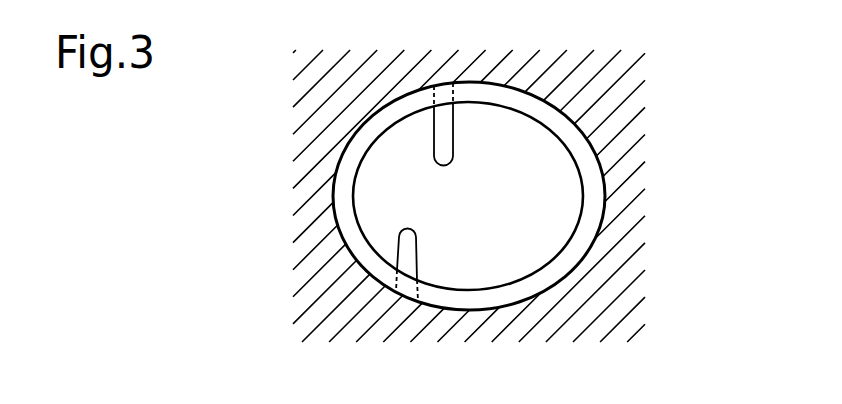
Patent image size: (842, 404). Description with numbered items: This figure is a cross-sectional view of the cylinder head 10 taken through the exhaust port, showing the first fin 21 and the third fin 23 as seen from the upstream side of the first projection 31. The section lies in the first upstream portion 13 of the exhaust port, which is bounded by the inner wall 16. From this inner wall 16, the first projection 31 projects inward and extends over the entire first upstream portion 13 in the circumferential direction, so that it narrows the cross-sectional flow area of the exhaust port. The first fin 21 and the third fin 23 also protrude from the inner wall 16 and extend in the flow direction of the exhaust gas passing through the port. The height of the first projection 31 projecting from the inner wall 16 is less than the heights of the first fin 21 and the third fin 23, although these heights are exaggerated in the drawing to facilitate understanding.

The cylinder head 10 is at (632, 103).
The first upstream portion 13 is at (523, 142).
The inner wall 16 is at (510, 302).
The first fin 21 is at (453, 147).
The third fin 23 is at (409, 233).
The first projection 31 is at (582, 222).